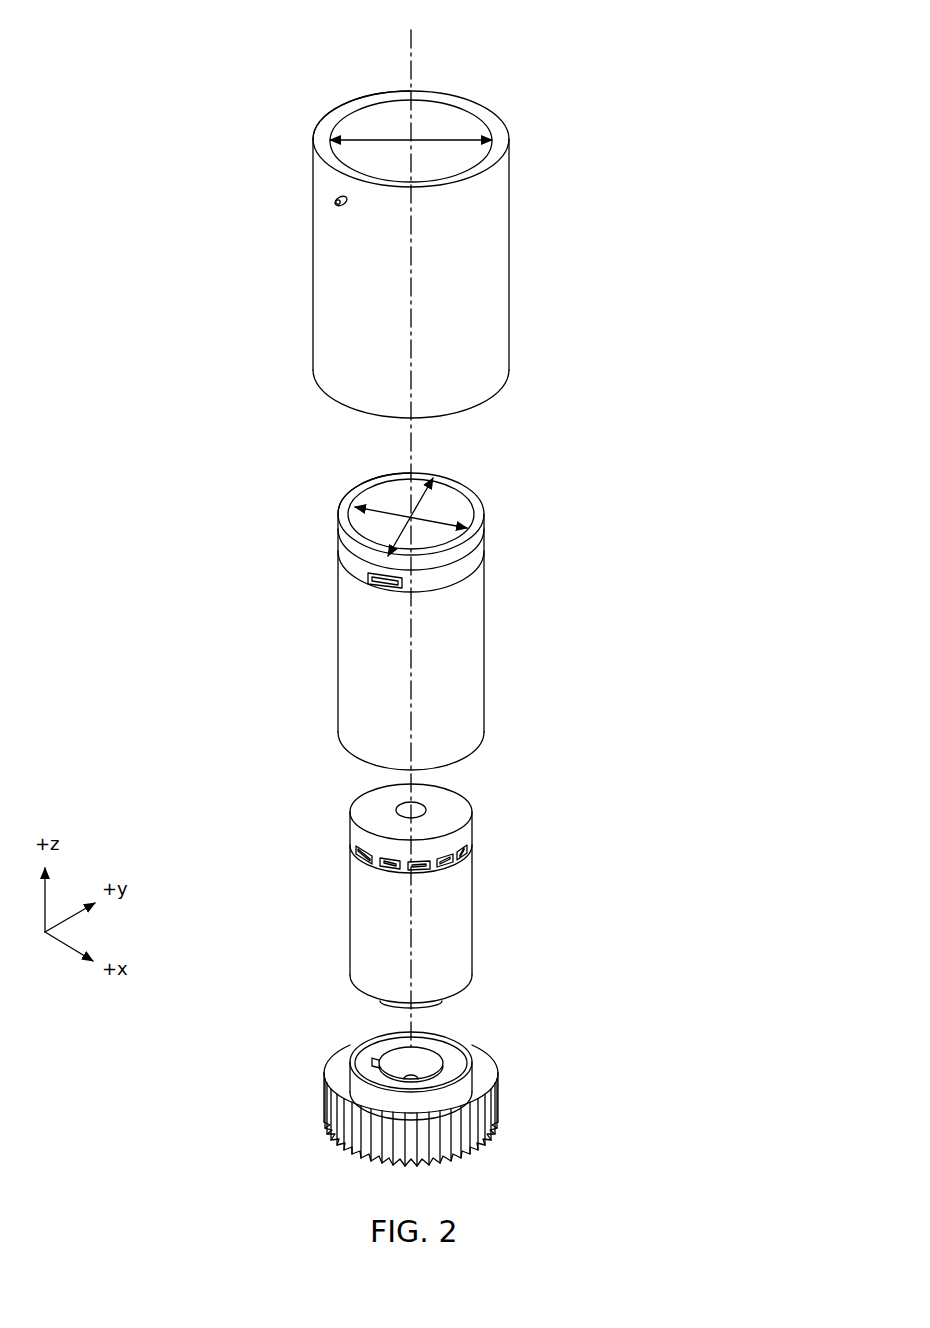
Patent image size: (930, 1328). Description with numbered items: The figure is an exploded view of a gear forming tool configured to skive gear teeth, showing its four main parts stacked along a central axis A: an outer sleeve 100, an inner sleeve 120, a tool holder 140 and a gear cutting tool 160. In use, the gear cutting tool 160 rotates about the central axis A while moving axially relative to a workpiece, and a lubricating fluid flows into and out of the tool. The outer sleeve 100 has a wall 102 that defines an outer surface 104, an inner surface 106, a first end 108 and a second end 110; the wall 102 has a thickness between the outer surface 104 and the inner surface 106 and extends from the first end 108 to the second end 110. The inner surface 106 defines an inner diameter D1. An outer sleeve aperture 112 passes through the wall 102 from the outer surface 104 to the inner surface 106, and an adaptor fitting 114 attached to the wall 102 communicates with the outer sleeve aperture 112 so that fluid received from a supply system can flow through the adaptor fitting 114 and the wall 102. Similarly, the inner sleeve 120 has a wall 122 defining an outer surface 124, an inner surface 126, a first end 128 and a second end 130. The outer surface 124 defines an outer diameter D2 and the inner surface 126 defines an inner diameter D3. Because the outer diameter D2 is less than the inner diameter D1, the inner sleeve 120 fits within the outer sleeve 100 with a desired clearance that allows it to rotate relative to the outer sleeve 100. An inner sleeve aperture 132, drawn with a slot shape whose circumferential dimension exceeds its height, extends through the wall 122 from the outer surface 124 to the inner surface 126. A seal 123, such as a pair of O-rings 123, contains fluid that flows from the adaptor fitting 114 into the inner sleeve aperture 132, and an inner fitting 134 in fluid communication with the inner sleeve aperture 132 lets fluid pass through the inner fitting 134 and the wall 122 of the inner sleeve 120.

The outer sleeve 100 is at (464, 229).
The wall 102 is at (503, 128).
The outer surface 104 is at (495, 203).
The inner surface 106 is at (455, 118).
The first end 108 is at (325, 138).
The second end 110 is at (322, 388).
The outer sleeve aperture 112 is at (347, 205).
The adaptor fitting 114 is at (334, 199).
The inner sleeve 120 is at (468, 599).
The wall 122 is at (486, 511).
The seal 123 is at (481, 553).
The outer surface 124 is at (470, 703).
The inner surface 126 is at (452, 503).
The first end 128 is at (349, 504).
The second end 130 is at (347, 746).
The inner sleeve aperture 132 is at (370, 576).
The inner fitting 134 is at (386, 588).
The tool holder 140 is at (477, 895).
The gear cutting tool 160 is at (510, 1107).
The central axis A is at (410, 54).
The inner diameter D1 is at (396, 137).
The outer diameter D2 is at (404, 518).
The inner diameter D3 is at (392, 512).